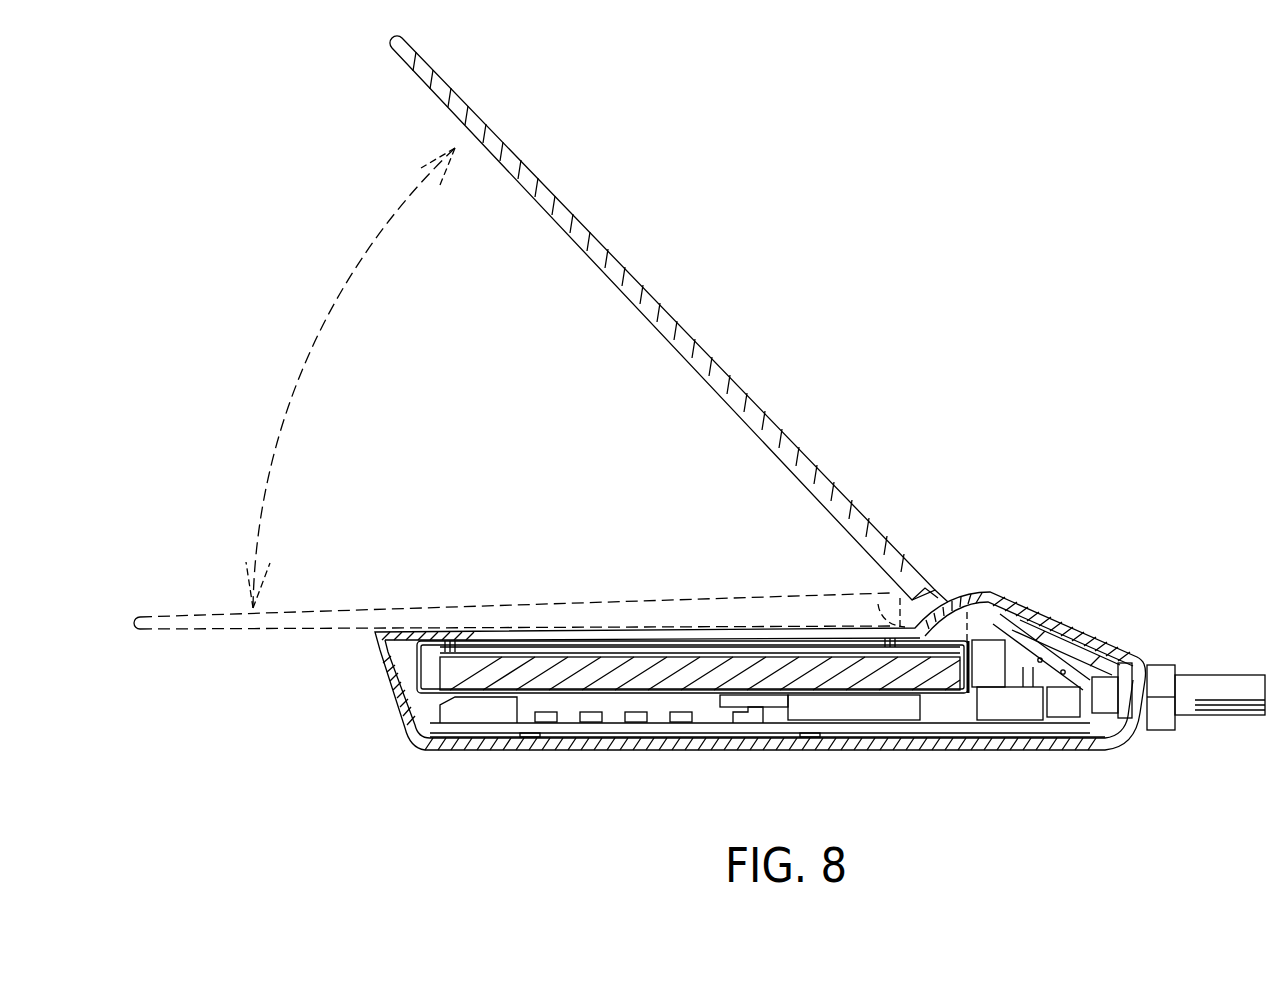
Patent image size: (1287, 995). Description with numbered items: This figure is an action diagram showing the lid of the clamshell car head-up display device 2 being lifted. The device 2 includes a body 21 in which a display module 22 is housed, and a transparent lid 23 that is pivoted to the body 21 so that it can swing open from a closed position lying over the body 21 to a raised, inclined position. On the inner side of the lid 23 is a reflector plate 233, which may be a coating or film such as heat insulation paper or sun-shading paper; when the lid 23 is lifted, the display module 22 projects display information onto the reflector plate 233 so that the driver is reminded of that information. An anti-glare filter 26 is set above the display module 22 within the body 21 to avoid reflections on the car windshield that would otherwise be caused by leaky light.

The clamshell car head-up display device 2 is at (816, 294).
The body 21 is at (387, 683).
The display module 22 is at (644, 672).
The lid 23 is at (627, 273).
The reflector plate 233 is at (545, 205).
The anti-glare filter 26 is at (551, 645).